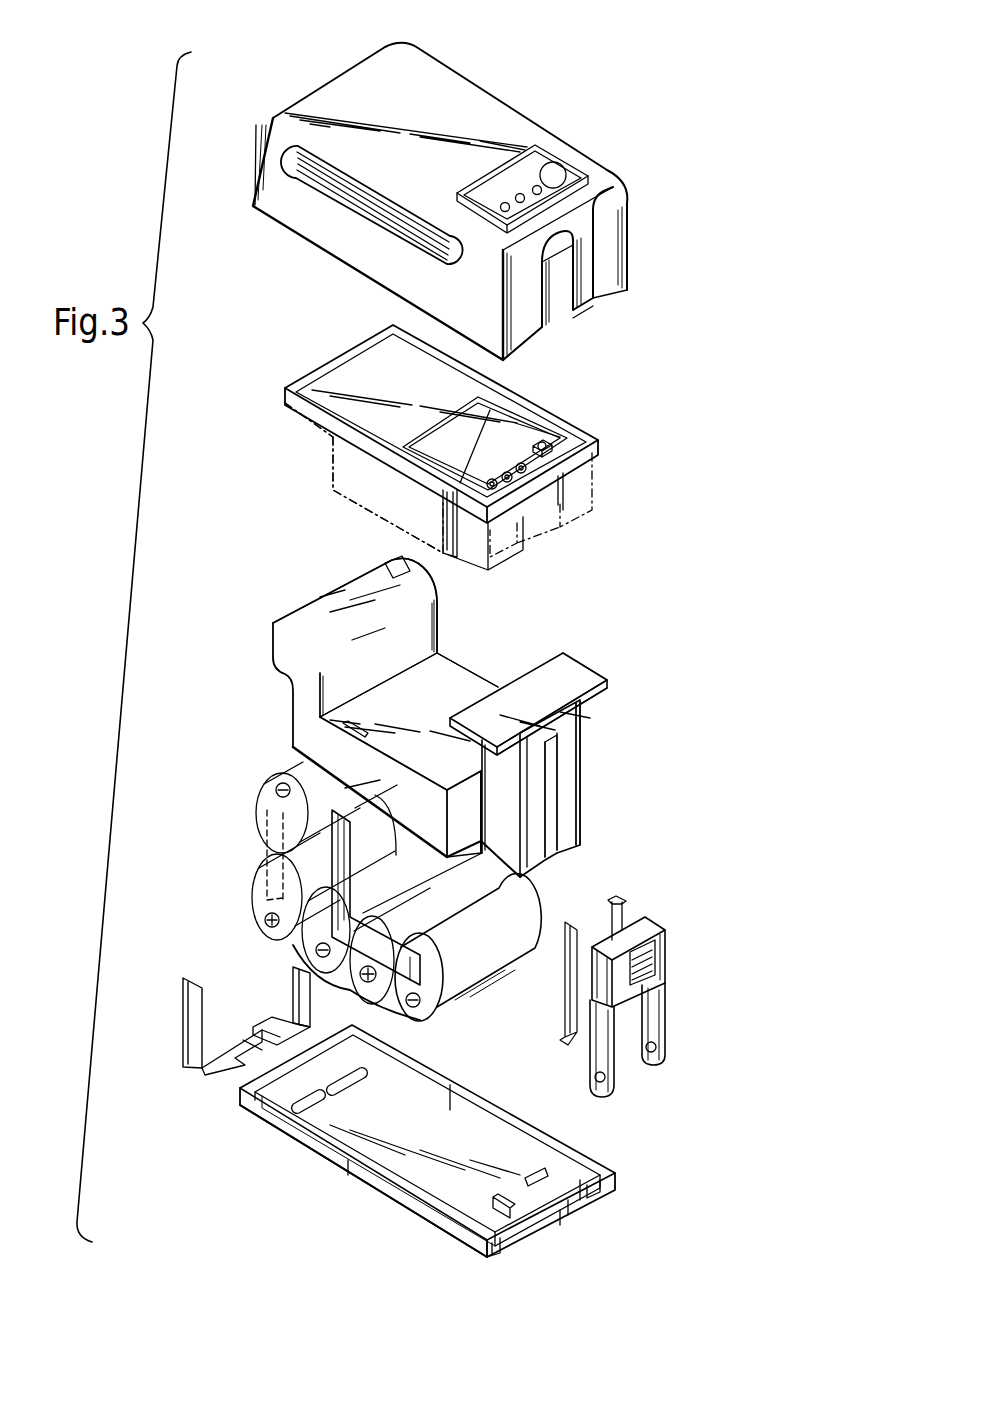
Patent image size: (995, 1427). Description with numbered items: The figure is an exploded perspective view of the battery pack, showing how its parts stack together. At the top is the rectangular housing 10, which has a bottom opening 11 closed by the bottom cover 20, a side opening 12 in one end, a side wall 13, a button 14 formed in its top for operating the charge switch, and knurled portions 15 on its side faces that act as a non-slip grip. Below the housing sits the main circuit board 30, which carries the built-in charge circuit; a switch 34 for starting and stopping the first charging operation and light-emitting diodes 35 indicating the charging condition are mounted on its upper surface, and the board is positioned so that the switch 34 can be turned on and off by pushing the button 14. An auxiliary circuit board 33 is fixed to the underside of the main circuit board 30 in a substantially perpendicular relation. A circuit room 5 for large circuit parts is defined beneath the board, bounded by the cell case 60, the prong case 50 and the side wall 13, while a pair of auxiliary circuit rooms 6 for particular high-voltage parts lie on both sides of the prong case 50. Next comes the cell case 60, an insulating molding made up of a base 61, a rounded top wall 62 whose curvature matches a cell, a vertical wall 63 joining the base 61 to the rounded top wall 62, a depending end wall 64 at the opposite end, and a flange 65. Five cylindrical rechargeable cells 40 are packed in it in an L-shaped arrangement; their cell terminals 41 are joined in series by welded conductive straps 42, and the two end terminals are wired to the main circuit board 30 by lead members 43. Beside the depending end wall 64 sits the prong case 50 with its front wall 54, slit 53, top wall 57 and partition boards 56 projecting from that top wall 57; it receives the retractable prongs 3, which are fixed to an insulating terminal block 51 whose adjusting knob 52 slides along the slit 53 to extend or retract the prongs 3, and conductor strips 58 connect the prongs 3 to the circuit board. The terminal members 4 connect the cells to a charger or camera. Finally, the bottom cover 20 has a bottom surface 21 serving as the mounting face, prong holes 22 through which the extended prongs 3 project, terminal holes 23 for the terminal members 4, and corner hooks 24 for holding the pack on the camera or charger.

The retractable prongs 3 is at (665, 1022).
The terminal members 4 is at (290, 987).
The circuit room 5 is at (343, 472).
The auxiliary circuit rooms 6 is at (588, 467).
The housing 10 is at (448, 85).
The bottom opening 11 is at (255, 228).
The side opening 12 is at (568, 272).
The side wall 13 is at (475, 298).
The button 14 is at (556, 170).
The knurled portions 15 is at (360, 200).
The bottom cover 20 is at (367, 1183).
The bottom surface 21 is at (402, 1215).
The prong holes 22 is at (493, 1202).
The terminal holes 23 is at (337, 1093).
The hooks 24 is at (492, 1258).
The main circuit board 30 is at (353, 378).
The auxiliary circuit board 33 is at (448, 503).
The switch 34 is at (548, 448).
The light-emitting diodes 35 is at (508, 480).
The rechargeable cells 40 is at (313, 942).
The cell terminals 41 is at (257, 905).
The conductive straps 42 is at (255, 873).
The lead members 43 is at (338, 848).
The prong case 50 is at (553, 668).
The terminal block 51 is at (658, 938).
The adjusting knob 52 is at (655, 967).
The slit 53 is at (548, 778).
The front wall 54 is at (563, 805).
The partition boards 56 is at (583, 675).
The top wall 57 is at (563, 700).
The conductor strips 58 is at (622, 907).
The cell case 60 is at (398, 698).
The base 61 is at (450, 665).
The rounded top wall 62 is at (310, 620).
The vertical wall 63 is at (352, 675).
The depending end wall 64 is at (467, 807).
The flange 65 is at (368, 783).